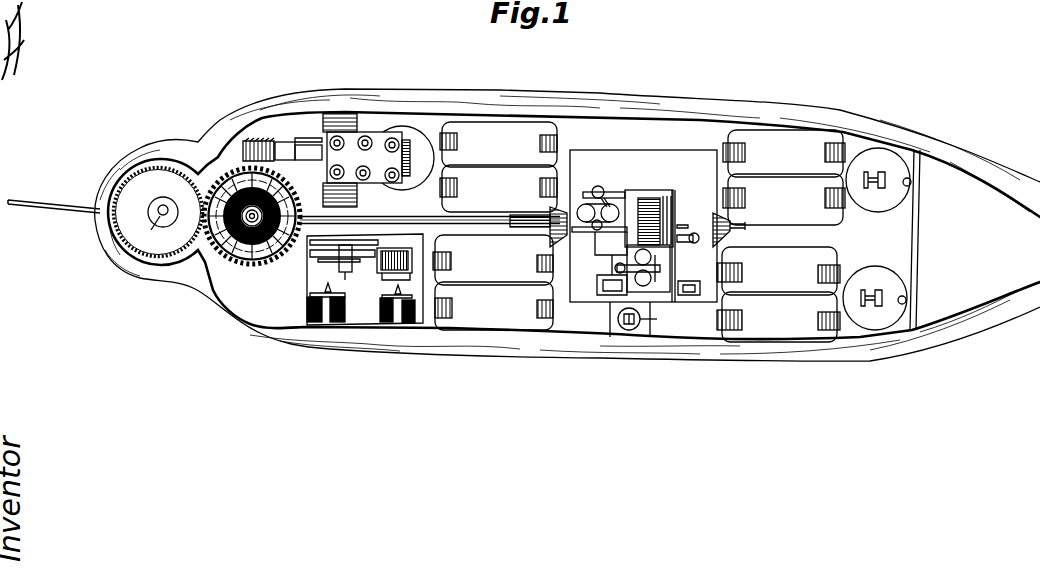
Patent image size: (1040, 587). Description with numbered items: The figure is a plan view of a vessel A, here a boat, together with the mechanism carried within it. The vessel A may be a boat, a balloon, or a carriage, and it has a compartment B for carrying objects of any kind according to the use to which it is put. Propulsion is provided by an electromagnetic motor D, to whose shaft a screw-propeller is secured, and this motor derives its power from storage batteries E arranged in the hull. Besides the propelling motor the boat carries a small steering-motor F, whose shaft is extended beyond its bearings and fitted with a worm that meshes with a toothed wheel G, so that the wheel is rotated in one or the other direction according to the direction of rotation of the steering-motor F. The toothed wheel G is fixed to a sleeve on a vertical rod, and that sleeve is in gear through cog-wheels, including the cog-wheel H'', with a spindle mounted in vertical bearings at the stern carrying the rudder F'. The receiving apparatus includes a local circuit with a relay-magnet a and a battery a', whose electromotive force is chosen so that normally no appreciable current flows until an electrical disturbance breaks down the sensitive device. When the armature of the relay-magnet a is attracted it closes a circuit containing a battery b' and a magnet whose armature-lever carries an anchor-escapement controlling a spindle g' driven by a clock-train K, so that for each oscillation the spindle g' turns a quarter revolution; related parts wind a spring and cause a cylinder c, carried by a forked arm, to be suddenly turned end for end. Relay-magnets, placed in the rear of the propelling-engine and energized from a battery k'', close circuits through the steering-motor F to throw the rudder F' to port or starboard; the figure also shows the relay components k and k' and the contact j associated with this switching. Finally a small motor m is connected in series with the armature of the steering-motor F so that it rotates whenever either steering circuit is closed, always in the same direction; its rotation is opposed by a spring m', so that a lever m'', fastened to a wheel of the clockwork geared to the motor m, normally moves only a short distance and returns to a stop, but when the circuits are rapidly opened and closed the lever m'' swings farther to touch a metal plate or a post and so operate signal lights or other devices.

The vessel A is at (567, 223).
The compartment B is at (931, 240).
The electromagnetic motor D is at (540, 227).
The storage batteries E is at (639, 232).
The steering-motor F is at (378, 160).
The rudder F' is at (54, 197).
The toothed wheel G is at (252, 213).
The cog-wheel H'' is at (158, 212).
The spindle g' is at (163, 220).
The clock-train K is at (643, 226).
The relay-magnet a is at (642, 268).
The battery a' is at (875, 298).
The battery b' is at (878, 180).
The cylinder c is at (689, 282).
The plunger j is at (603, 275).
The battery k is at (390, 304).
The battery k' is at (333, 302).
The battery k'' is at (641, 319).
The small motor m is at (386, 266).
The spring m' is at (365, 273).
The lever m'' is at (340, 265).